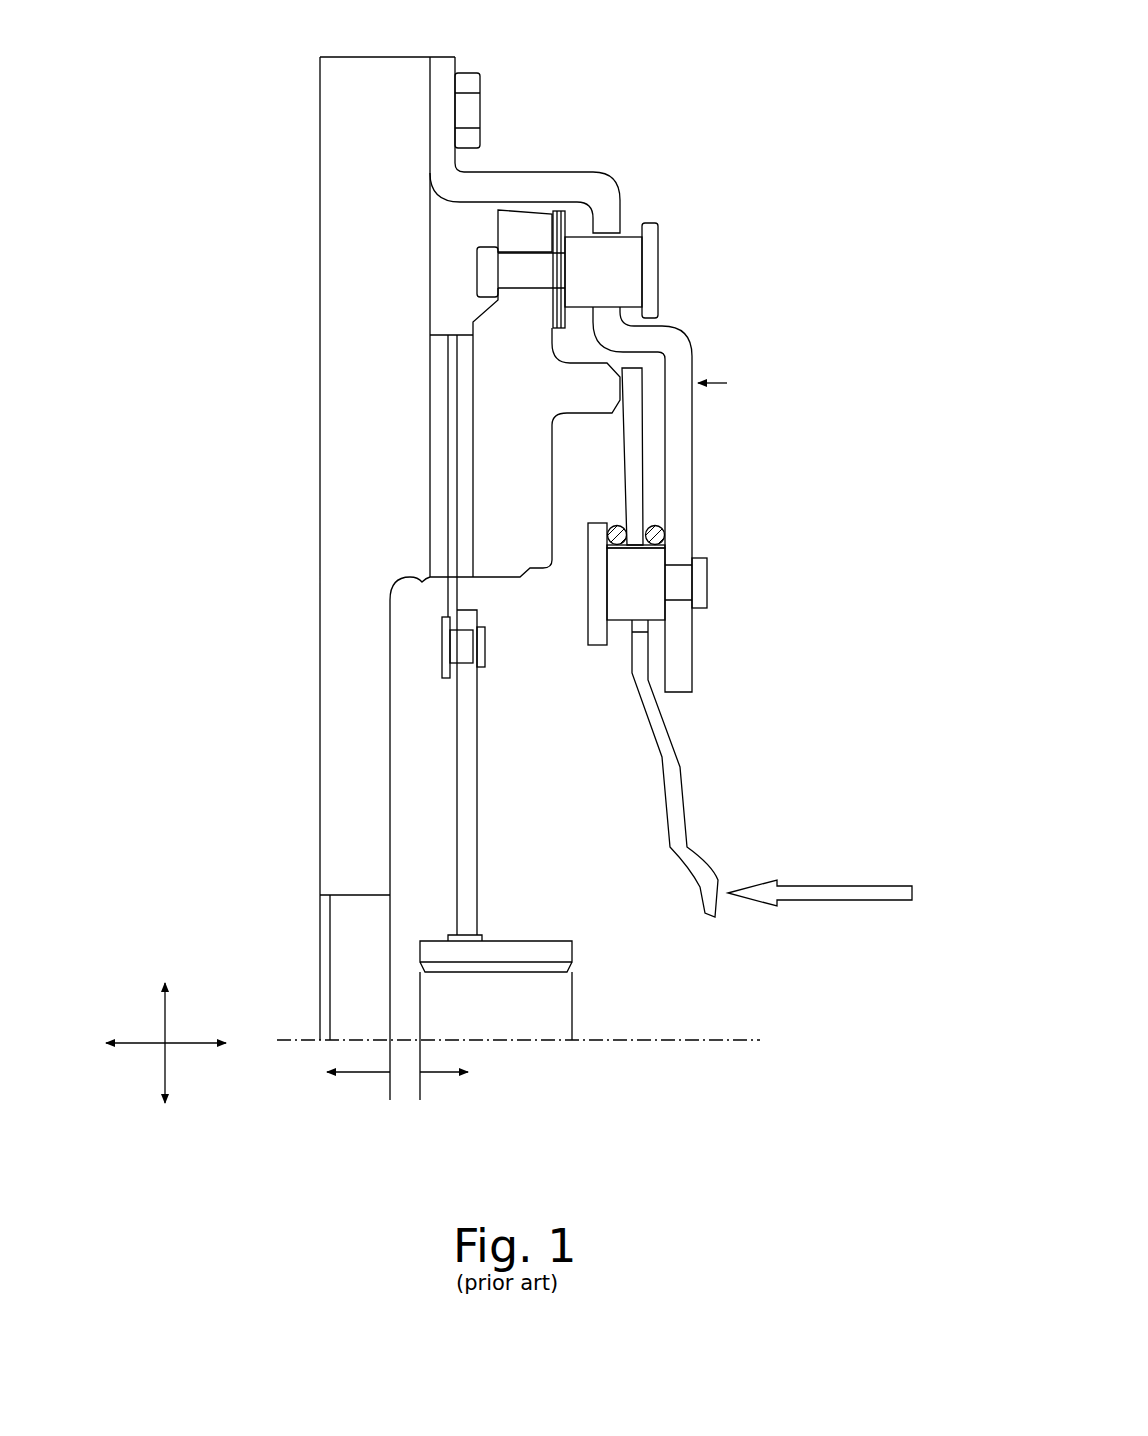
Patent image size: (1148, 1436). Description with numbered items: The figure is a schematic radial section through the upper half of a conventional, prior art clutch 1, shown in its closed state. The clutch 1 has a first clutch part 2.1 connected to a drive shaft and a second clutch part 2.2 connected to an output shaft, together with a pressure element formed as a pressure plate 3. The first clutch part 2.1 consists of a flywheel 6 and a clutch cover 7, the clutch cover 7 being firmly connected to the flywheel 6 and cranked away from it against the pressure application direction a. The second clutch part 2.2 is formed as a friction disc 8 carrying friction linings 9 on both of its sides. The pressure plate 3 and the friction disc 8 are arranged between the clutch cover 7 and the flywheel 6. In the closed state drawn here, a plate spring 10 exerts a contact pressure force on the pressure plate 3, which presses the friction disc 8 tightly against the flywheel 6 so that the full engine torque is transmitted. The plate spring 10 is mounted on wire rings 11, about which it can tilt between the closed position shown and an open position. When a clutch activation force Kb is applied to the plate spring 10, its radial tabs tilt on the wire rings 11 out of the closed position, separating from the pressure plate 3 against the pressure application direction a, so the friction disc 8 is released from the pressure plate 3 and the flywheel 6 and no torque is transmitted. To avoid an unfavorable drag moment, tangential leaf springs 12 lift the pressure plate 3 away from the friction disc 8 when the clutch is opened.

The prior art clutch 1 is at (208, 76).
The first clutch part 2.1 is at (290, 411).
The second clutch part 2.2 is at (449, 768).
The pressure plate 3 is at (557, 385).
The flywheel 6 is at (340, 592).
The clutch cover 7 is at (547, 176).
The friction disc 8 is at (463, 765).
The friction linings 9 is at (438, 483).
The plate spring 10 is at (675, 765).
The wire rings 11 is at (655, 526).
The tangential leaf springs 12 is at (567, 215).
The pressure application direction a is at (712, 370).
The clutch activation force Kb is at (820, 882).